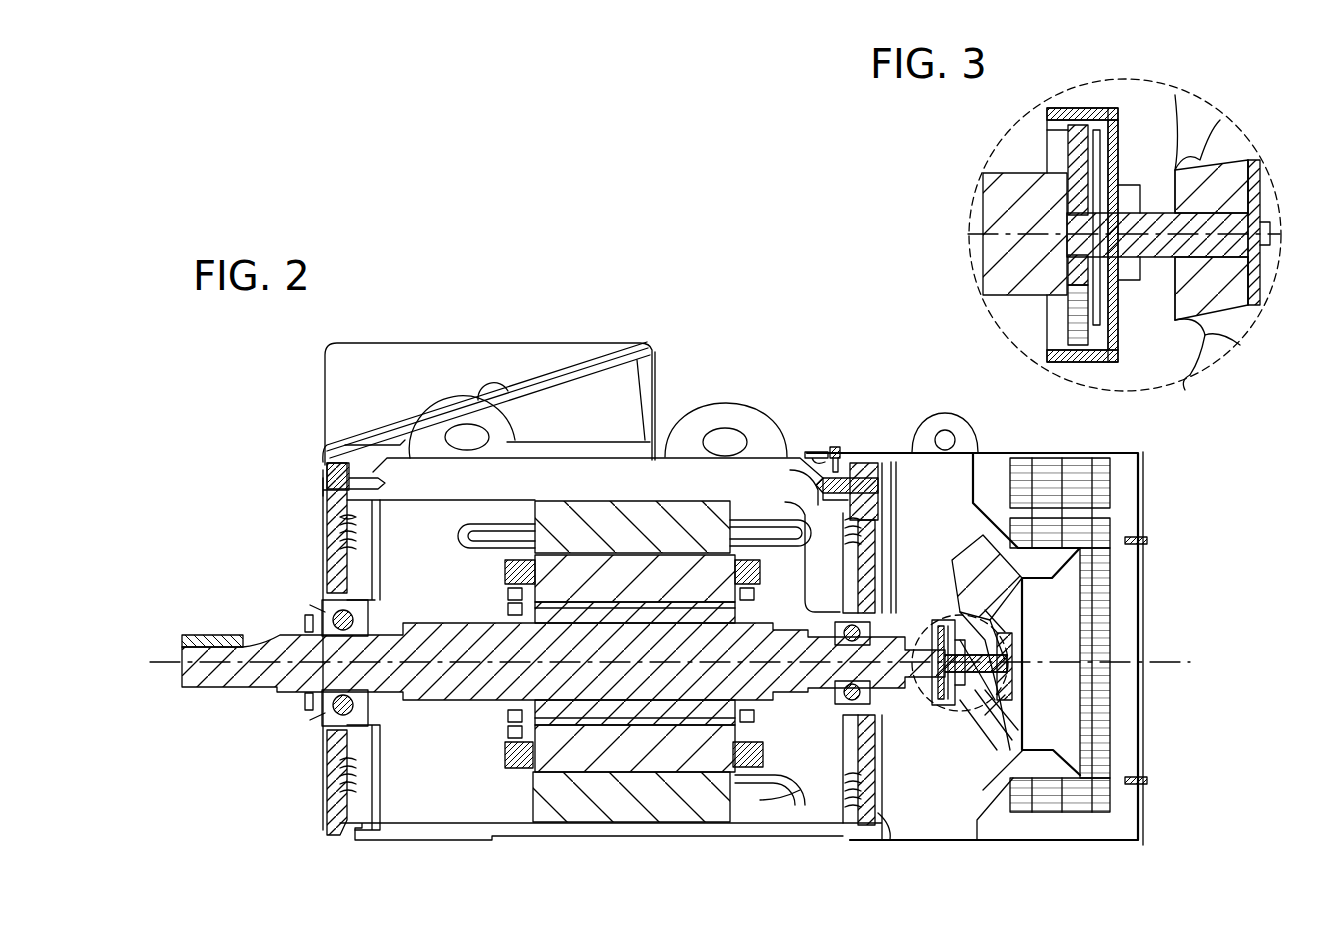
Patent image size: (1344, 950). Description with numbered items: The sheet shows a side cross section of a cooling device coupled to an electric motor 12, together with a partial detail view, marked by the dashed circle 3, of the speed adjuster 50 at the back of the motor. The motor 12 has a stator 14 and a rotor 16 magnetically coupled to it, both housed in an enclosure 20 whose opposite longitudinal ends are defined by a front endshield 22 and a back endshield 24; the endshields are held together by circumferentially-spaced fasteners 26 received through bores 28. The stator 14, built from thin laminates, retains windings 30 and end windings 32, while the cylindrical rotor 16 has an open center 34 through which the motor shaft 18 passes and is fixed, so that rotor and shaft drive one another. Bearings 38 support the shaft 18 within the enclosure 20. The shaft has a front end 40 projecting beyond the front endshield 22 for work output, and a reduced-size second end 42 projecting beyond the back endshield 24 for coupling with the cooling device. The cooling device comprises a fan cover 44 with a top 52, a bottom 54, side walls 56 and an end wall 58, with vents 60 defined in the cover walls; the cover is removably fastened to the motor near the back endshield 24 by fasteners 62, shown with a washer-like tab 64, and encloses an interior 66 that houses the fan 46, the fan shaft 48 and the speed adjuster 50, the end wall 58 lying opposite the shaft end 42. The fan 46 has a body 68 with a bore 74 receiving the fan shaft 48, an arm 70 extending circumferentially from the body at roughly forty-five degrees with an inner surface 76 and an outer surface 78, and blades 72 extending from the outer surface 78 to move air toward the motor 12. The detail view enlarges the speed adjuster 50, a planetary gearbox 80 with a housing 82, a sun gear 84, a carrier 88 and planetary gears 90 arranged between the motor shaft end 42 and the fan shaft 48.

In FIG. 2, the detail view circle 3 is at (1000, 690).
In FIG. 2, the electric motor 12 is at (680, 470).
In FIG. 2, the stator 14 is at (702, 510).
In FIG. 2, the rotor 16 is at (720, 552).
In FIG. 2, the motor shaft 18 is at (837, 690).
In FIG. 3, the motor shaft 18 is at (998, 200).
In FIG. 2, the enclosure 20 is at (630, 470).
In FIG. 2, the front endshield 22 is at (320, 535).
In FIG. 2, the back endshield 24 is at (882, 835).
In FIG. 2, the fasteners 26 is at (325, 483).
In FIG. 2, the bores 28 is at (330, 493).
In FIG. 2, the windings 30 is at (595, 510).
In FIG. 2, the end windings 32 is at (520, 500).
In FIG. 2, the open center 34 is at (560, 690).
In FIG. 2, the bearings 38 is at (330, 600).
In FIG. 2, the front end 40 is at (182, 665).
In FIG. 2, the second end 42 is at (905, 655).
In FIG. 3, the second end 42 is at (1090, 222).
In FIG. 2, the fan cover 44 is at (1125, 468).
In FIG. 2, the fan 46 is at (950, 640).
In FIG. 3, the fan 46 is at (1195, 160).
In FIG. 2, the fan shaft 48 is at (960, 650).
In FIG. 3, the fan shaft 48 is at (1240, 240).
In FIG. 2, the speed adjuster 50 is at (937, 612).
In FIG. 3, the speed adjuster 50 is at (1090, 97).
In FIG. 2, the top 52 is at (1060, 458).
In FIG. 2, the bottom 54 is at (1062, 840).
In FIG. 2, the side walls 56 is at (1115, 825).
In FIG. 2, the end wall 58 is at (1150, 748).
In FIG. 2, the vents 60 is at (1100, 500).
In FIG. 2, the fasteners 62 is at (838, 447).
In FIG. 2, the washer 64 is at (818, 455).
In FIG. 2, the interior 66 is at (925, 768).
In FIG. 3, the body 68 is at (1195, 170).
In FIG. 2, the arm 70 is at (955, 700).
In FIG. 3, the arm 70 is at (1225, 325).
In FIG. 2, the blades 72 is at (1000, 590).
In FIG. 3, the bore 74 is at (1250, 200).
In FIG. 3, the inner surface 76 is at (1195, 375).
In FIG. 3, the outer surface 78 is at (1230, 345).
In FIG. 3, the planetary gearbox 80 is at (1068, 137).
In FIG. 3, the housing 82 is at (1080, 108).
In FIG. 3, the sun gear 84 is at (1075, 267).
In FIG. 3, the carrier 88 is at (1097, 160).
In FIG. 3, the planetary gears 90 is at (1075, 300).